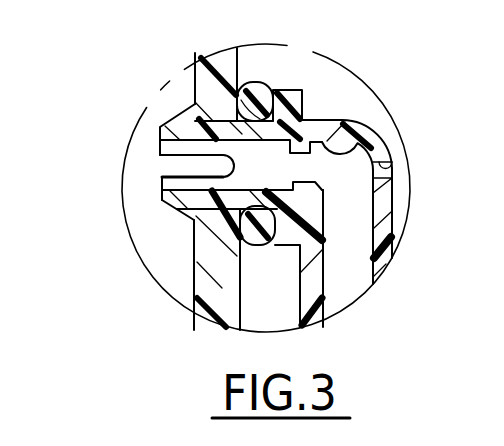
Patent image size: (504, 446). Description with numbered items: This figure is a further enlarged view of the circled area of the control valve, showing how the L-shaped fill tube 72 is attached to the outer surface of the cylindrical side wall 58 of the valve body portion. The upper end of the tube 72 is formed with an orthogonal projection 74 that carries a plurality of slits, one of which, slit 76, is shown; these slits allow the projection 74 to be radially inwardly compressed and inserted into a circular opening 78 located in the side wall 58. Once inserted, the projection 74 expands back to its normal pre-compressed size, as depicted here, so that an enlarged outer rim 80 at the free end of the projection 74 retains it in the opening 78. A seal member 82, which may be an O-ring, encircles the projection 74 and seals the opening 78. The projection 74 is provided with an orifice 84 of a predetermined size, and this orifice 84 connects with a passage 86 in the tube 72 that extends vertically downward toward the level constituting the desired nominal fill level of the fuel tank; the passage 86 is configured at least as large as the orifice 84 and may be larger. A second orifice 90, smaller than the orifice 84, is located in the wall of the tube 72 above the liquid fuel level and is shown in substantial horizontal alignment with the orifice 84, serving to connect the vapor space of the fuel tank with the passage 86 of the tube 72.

The cylindrical side wall 58 is at (215, 283).
The L-shaped fill tube 72 is at (396, 209).
The orthogonal projection 74 is at (200, 236).
The slit 76 is at (160, 164).
The circular opening 78 is at (165, 151).
The enlarged outer rim 80 is at (160, 129).
The seal member 82 is at (263, 55).
The orifice 84 is at (360, 112).
The passage 86 is at (376, 238).
The second orifice 90 is at (380, 171).